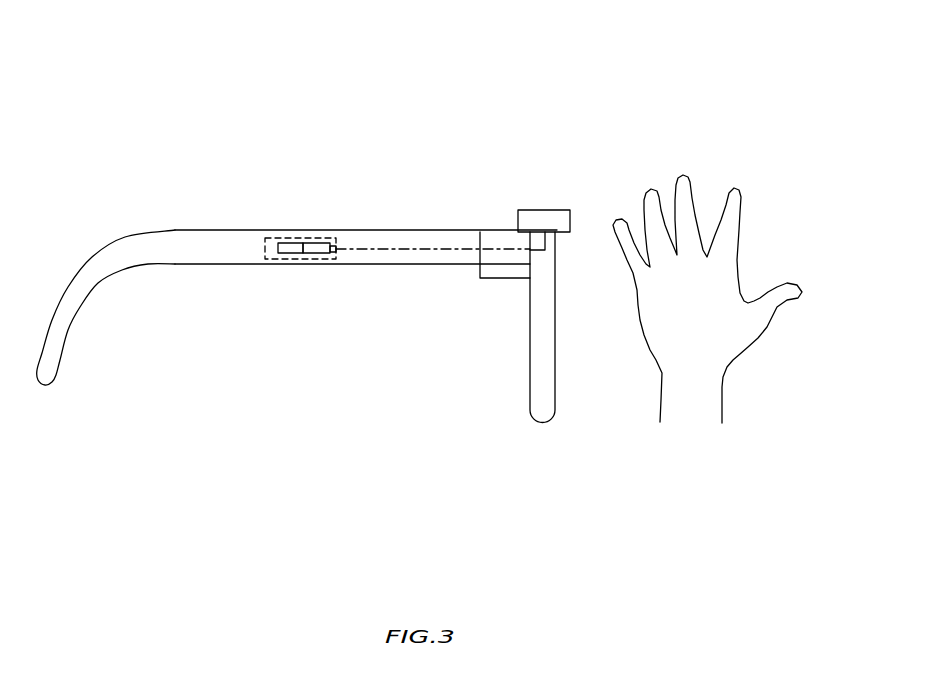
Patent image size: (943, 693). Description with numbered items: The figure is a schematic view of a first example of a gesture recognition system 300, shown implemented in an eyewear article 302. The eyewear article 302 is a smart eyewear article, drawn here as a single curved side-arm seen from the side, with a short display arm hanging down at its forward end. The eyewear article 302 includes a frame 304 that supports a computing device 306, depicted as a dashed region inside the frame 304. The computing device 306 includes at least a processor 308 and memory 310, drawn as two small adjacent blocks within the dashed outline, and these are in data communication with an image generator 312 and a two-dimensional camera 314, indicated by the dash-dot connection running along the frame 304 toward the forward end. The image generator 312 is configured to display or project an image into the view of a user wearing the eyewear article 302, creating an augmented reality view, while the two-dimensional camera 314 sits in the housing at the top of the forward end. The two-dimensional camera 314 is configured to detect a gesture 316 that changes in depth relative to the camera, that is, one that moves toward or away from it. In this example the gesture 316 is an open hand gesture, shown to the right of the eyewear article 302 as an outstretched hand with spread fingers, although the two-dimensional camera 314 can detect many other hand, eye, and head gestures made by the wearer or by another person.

The gesture recognition system 300 is at (712, 55).
The eyewear article 302 is at (141, 215).
The frame 304 is at (240, 266).
The computing device 306 is at (300, 262).
The processor 308 is at (288, 247).
The memory 310 is at (318, 248).
The image generator 312 is at (488, 240).
The 2D camera 314 is at (545, 210).
The gesture 316 is at (738, 192).